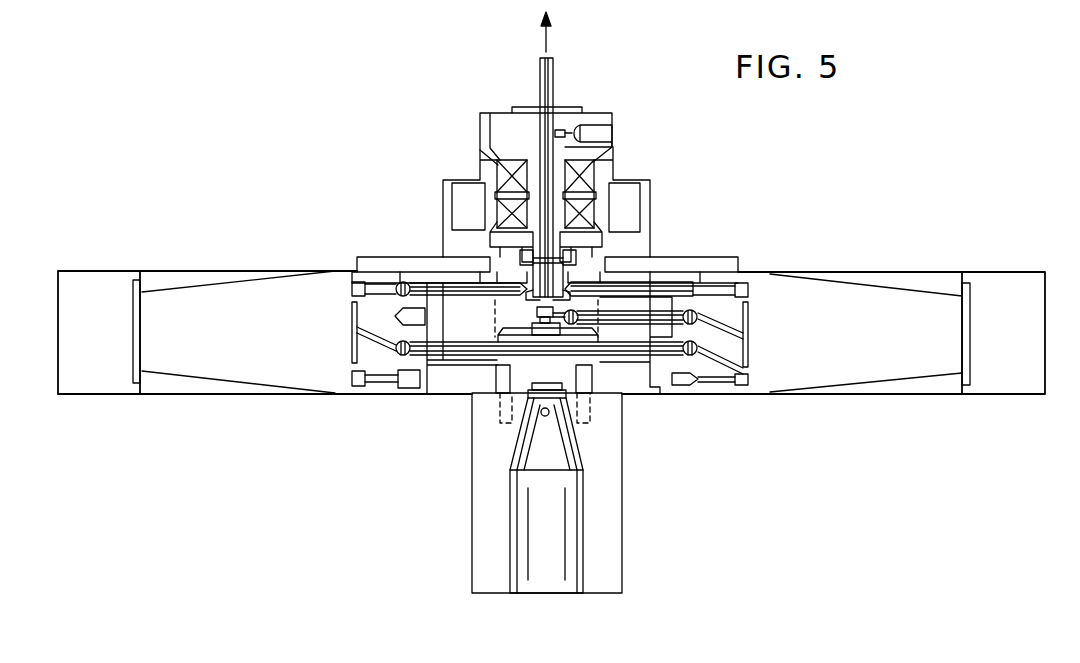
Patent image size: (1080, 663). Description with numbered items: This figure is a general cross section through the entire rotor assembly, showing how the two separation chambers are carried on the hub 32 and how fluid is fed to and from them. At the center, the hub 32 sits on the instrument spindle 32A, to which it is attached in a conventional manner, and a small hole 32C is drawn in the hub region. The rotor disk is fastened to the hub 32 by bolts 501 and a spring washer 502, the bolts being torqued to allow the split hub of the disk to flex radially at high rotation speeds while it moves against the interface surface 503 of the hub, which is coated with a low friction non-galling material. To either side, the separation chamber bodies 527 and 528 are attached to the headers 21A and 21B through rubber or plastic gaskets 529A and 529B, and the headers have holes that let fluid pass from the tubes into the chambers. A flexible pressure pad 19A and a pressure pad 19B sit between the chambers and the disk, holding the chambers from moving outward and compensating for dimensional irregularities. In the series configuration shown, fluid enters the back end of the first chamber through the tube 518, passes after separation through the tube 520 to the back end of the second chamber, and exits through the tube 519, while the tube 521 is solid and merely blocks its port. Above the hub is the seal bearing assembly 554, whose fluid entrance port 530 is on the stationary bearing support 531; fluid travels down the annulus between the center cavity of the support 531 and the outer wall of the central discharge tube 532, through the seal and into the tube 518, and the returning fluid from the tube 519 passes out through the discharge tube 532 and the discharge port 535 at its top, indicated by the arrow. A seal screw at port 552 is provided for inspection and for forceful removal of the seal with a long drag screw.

The pressure pad 19A is at (142, 292).
The pressure pad 19B is at (960, 292).
The separation chamber body 527 is at (278, 273).
The separation chamber body 528 is at (803, 275).
The gasket 529A is at (352, 397).
The gasket 529B is at (750, 395).
The tube 518 is at (413, 285).
The tube 519 is at (693, 290).
The tube 520 is at (410, 372).
The tube 521 is at (672, 282).
The header 21A is at (368, 397).
The header 21B is at (702, 395).
The bolts 501 is at (602, 412).
The spring washer 502 is at (600, 365).
The interface surface 503 is at (472, 396).
The seal screw port 552 is at (543, 332).
The fluid entrance port 530 is at (585, 136).
The stationary bearing support 531 is at (497, 163).
The discharge tube 532 is at (554, 80).
The discharge port 535 is at (549, 40).
The seal bearing assembly 554 is at (588, 235).
The hub 32 is at (622, 477).
The instrument spindle 32A is at (561, 546).
The hole 32C is at (547, 416).